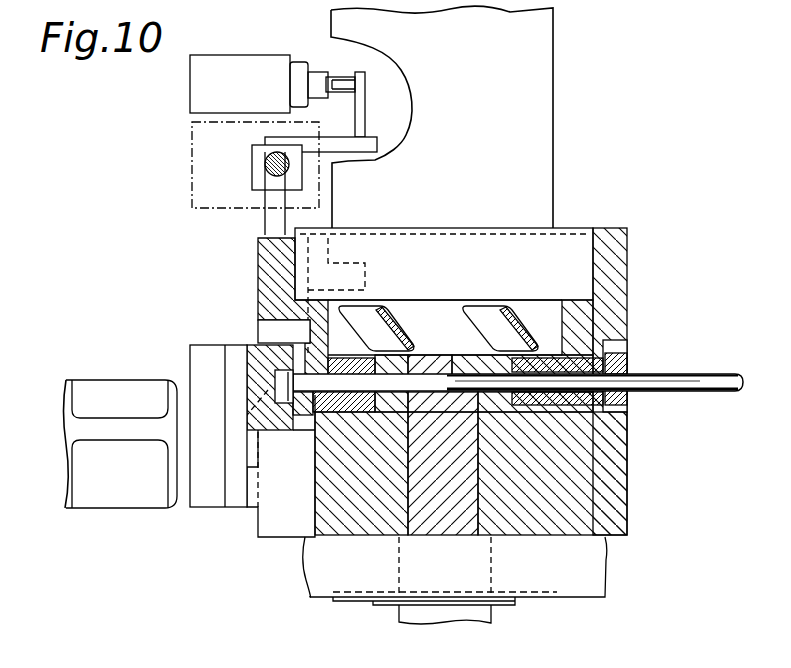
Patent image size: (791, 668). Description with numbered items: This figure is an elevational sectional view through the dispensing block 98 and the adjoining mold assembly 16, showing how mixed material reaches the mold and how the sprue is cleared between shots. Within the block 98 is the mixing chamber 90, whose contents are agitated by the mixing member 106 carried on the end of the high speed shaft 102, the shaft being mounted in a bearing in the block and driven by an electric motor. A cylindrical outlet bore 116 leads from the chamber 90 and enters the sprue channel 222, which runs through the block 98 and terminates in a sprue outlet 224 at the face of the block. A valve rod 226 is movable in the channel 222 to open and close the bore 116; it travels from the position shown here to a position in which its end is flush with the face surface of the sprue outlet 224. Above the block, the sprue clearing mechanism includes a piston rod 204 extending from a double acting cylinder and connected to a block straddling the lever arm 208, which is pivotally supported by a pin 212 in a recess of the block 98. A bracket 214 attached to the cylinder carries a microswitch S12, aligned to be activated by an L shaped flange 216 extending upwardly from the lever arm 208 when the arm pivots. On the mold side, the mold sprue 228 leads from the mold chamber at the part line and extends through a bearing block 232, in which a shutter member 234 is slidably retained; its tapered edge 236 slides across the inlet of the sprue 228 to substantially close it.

The microswitch S12 is at (247, 55).
The L shaped flange 216 is at (372, 85).
The bracket 214 is at (192, 122).
The piston rod 204 is at (252, 167).
The lever arm 208 is at (265, 222).
The pin 212 is at (354, 262).
The mixing member 106 is at (478, 309).
The mixing chamber 90 is at (555, 308).
The cylindrical bore 116 is at (438, 360).
The bearing block 232 is at (262, 342).
The shutter member 234 is at (280, 368).
The tapered edge 236 is at (280, 380).
The mold sprue 228 is at (213, 430).
The mold assembly 16 is at (174, 519).
The sprue outlet 224 is at (297, 395).
The sprue channel 222 is at (350, 396).
The valve rod 226 is at (717, 392).
The block 98 is at (627, 497).
The shaft 102 is at (493, 612).